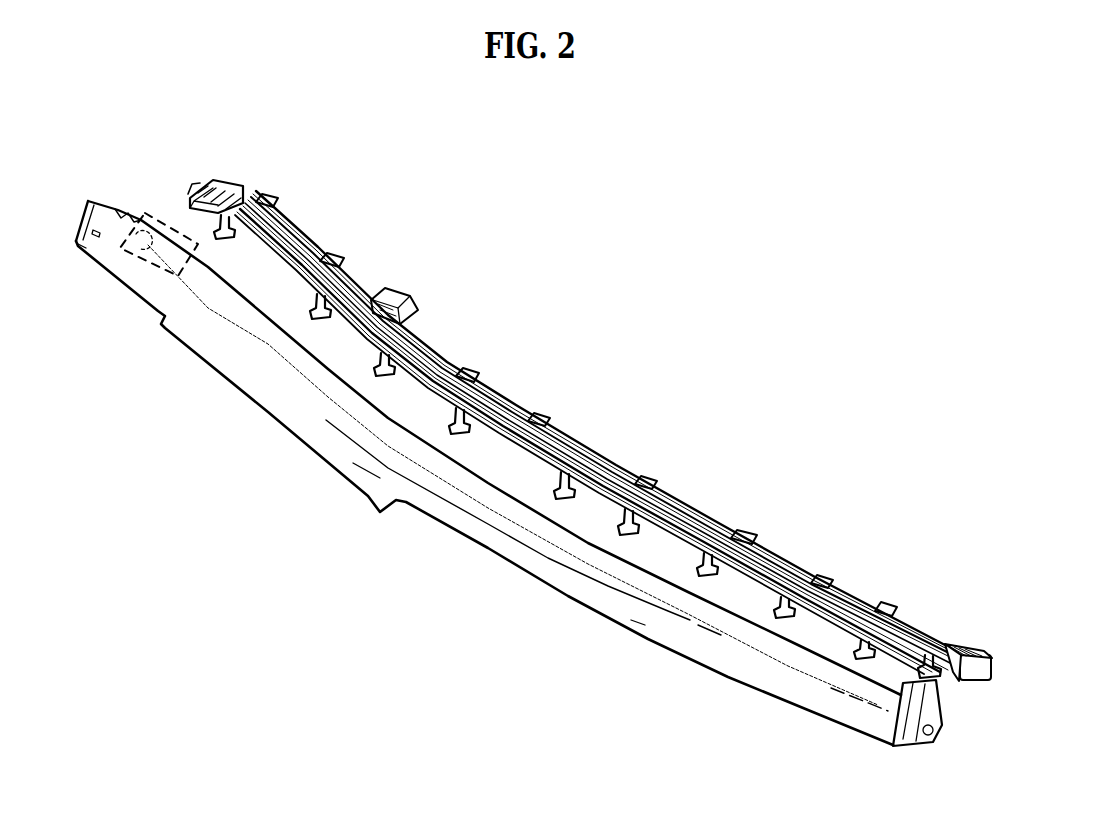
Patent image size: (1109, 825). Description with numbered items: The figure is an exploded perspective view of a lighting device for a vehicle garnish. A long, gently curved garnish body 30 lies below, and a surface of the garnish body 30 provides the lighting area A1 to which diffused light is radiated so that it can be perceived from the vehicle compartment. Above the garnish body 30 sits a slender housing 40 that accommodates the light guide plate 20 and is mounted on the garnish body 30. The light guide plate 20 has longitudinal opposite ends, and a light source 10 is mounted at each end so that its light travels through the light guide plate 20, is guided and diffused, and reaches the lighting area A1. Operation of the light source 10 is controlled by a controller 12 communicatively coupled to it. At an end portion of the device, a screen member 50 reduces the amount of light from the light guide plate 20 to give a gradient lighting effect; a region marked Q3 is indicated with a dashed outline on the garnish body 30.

The light source 10 is at (555, 387).
The controller 12 is at (393, 282).
The light guide plate 20 is at (483, 387).
The garnish body 30 is at (247, 387).
The housing 40 is at (597, 460).
The screen member 50 is at (197, 170).
The lighting area A1 is at (327, 387).
The reference region Q3 is at (159, 225).